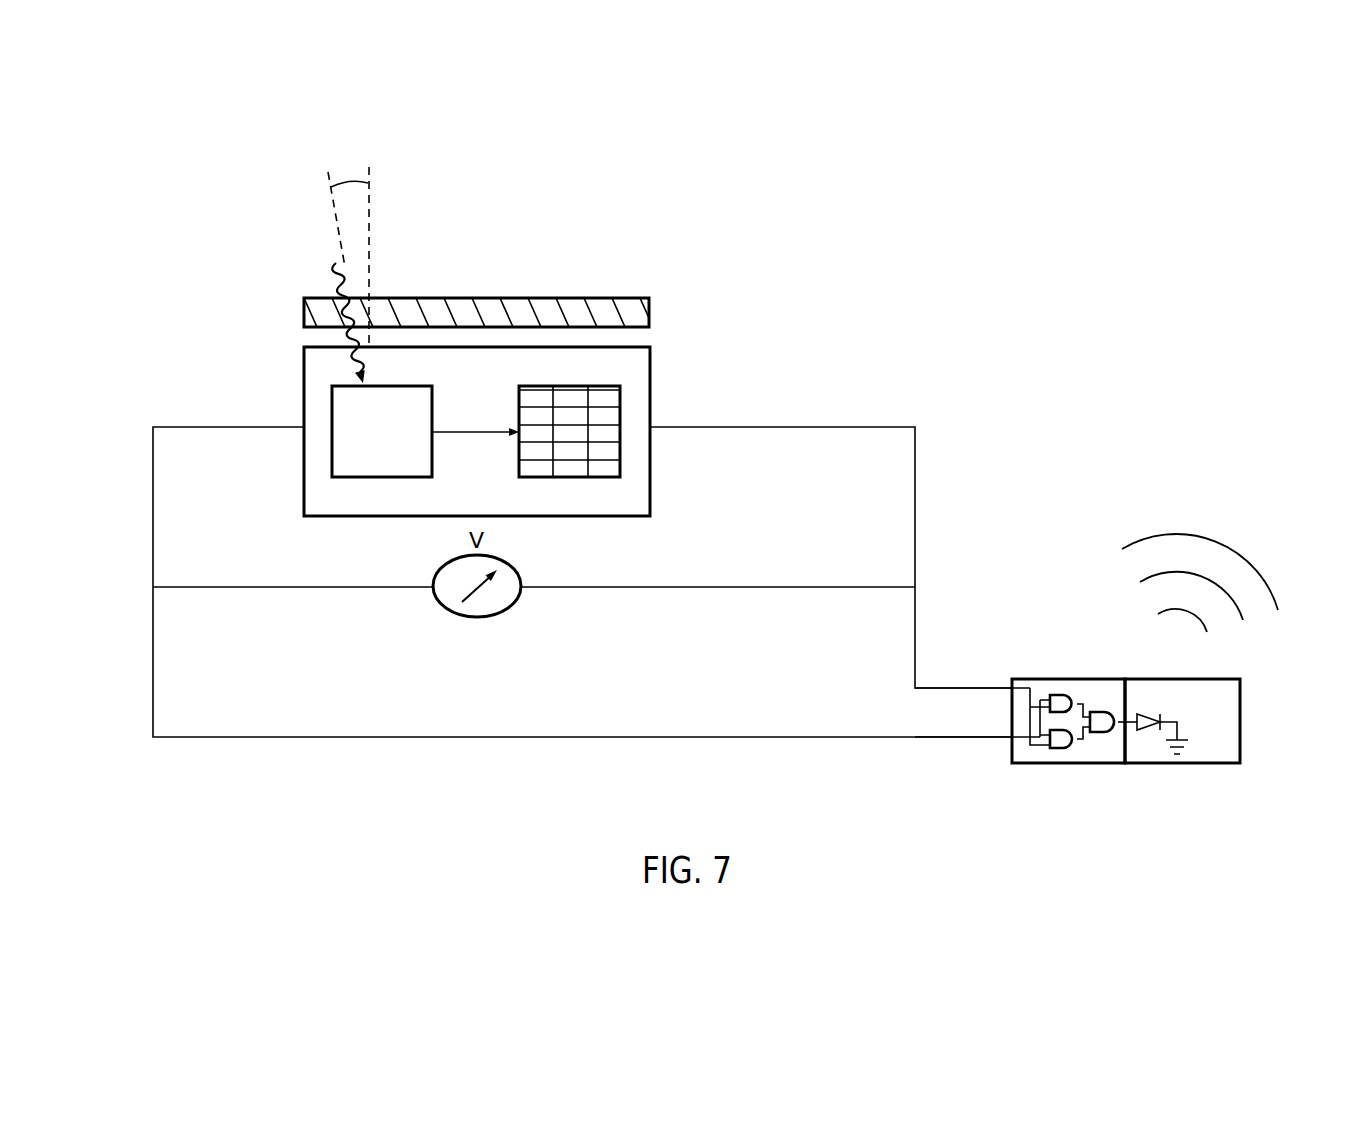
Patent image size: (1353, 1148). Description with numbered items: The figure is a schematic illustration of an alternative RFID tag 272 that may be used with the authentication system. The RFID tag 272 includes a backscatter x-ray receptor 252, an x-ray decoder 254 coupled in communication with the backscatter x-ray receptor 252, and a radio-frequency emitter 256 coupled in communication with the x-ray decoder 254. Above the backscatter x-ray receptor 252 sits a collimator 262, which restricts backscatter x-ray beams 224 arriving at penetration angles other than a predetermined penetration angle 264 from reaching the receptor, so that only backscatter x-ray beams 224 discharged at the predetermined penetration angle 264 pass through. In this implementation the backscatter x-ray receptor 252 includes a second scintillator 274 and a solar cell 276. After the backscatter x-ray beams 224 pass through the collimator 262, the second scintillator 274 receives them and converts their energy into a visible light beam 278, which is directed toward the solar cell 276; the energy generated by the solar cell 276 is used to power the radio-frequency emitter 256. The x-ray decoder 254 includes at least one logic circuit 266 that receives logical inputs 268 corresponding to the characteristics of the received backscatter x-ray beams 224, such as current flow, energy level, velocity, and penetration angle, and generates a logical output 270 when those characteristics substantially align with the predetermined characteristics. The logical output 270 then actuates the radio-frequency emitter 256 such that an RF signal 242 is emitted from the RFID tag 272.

The RFID tag 272 is at (166, 186).
The predetermined penetration angle 264 is at (348, 183).
The backscatter x-ray beams 224 is at (336, 265).
The collimator 262 is at (617, 297).
The backscatter x-ray receptor 252 is at (702, 350).
The second scintillator 274 is at (332, 392).
The visible light beam 278 is at (478, 432).
The solar cell 276 is at (620, 400).
The RF signal 242 is at (1238, 512).
The logical inputs 268 is at (978, 737).
The logic circuit 266 is at (1092, 712).
The logical output 270 is at (1122, 715).
The x-ray decoder 254 is at (1080, 763).
The radio-frequency emitter 256 is at (1222, 763).